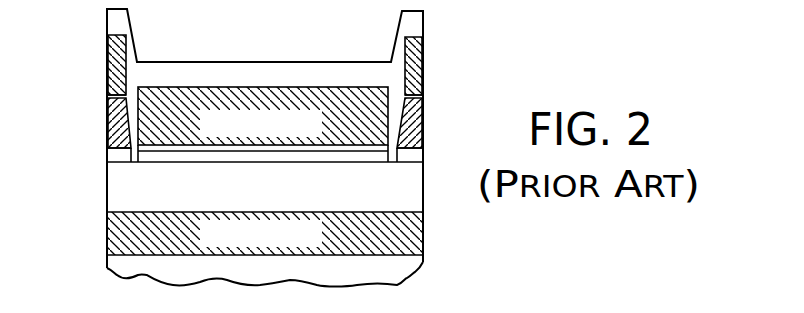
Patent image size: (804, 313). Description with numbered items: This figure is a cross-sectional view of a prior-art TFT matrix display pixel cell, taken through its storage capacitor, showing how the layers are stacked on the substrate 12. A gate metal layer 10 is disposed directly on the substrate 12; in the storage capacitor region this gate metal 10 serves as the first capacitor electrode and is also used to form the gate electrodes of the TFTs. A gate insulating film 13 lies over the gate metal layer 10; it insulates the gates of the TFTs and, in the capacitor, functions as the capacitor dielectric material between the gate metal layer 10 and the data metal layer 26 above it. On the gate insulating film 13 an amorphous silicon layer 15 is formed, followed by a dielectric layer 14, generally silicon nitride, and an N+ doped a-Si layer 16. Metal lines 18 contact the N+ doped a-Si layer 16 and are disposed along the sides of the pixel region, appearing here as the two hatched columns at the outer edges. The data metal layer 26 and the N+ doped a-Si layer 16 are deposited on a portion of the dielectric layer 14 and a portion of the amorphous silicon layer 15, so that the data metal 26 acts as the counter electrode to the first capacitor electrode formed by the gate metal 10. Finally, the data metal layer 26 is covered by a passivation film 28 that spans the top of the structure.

The gate metal layer 10 is at (108, 237).
The substrate 12 is at (411, 275).
The gate insulating film 13 is at (111, 188).
The dielectric layer 14 is at (108, 123).
The amorphous silicon layer 15 is at (108, 155).
The N+ doped a-Si layer 16 is at (423, 98).
The metal lines 18 is at (108, 58).
The data metal layer 26 is at (321, 87).
The passivation film 28 is at (157, 63).